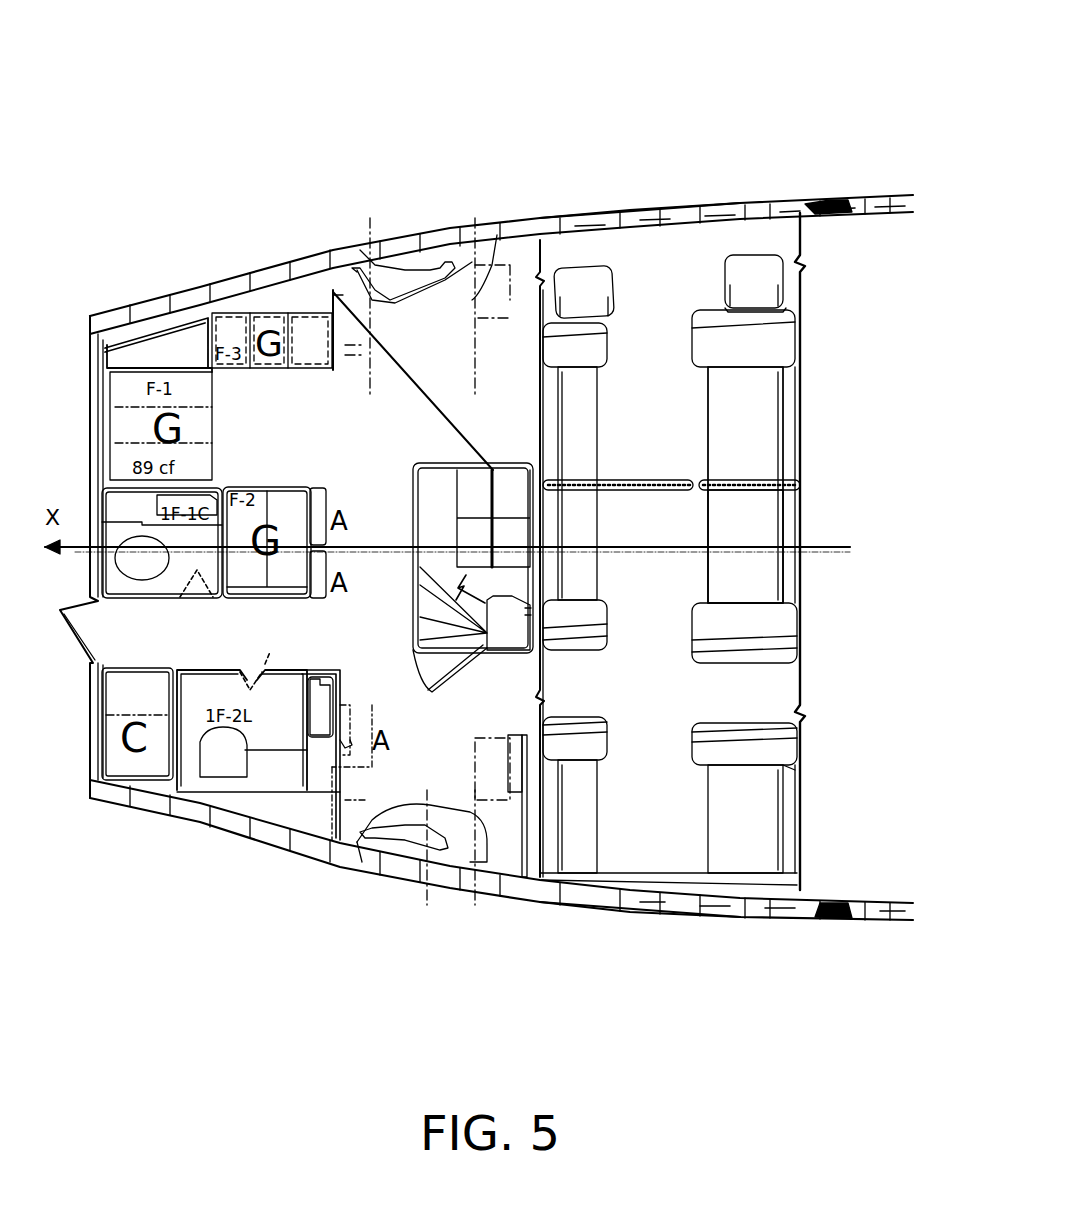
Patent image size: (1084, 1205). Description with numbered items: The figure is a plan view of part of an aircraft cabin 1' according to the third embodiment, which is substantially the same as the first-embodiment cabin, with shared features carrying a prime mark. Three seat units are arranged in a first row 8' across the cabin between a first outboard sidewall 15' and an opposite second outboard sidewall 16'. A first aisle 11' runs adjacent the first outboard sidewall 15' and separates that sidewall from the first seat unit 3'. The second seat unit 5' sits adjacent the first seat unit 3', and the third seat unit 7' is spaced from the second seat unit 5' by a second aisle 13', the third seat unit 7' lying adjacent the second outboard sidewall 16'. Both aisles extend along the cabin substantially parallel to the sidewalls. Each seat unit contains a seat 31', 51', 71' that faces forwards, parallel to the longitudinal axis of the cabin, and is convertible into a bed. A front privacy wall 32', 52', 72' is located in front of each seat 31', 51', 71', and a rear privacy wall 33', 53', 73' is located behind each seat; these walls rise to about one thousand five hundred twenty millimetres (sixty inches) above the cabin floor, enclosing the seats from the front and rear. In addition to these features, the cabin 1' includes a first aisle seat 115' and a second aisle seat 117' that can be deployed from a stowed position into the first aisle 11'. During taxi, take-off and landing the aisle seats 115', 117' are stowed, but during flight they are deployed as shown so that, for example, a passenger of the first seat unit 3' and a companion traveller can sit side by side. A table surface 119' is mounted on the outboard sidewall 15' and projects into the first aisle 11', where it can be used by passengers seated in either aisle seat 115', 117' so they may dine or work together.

The aircraft cabin 1' is at (486, 474).
The table surface 119' is at (468, 213).
The first aisle seat 115' is at (542, 208).
The first row 8' is at (625, 500).
The first outboard sidewall 15' is at (640, 139).
The first aisle 11' is at (727, 502).
The second aisle seat 117' is at (795, 223).
The rear privacy wall 33' is at (793, 309).
The first seat unit 3' is at (813, 470).
The seat 31' is at (796, 485).
The second seat unit 5' is at (734, 499).
The seat 51' is at (821, 546).
The rear privacy wall 53' is at (808, 626).
The second aisle 13' is at (807, 693).
The third seat unit 7' is at (805, 792).
The seat 71' is at (833, 819).
The rear privacy wall 73' is at (732, 825).
The second outboard sidewall 16' is at (640, 964).
The front privacy wall 72' is at (447, 867).
The front privacy wall 52' is at (390, 442).
The front privacy wall 32' is at (435, 310).